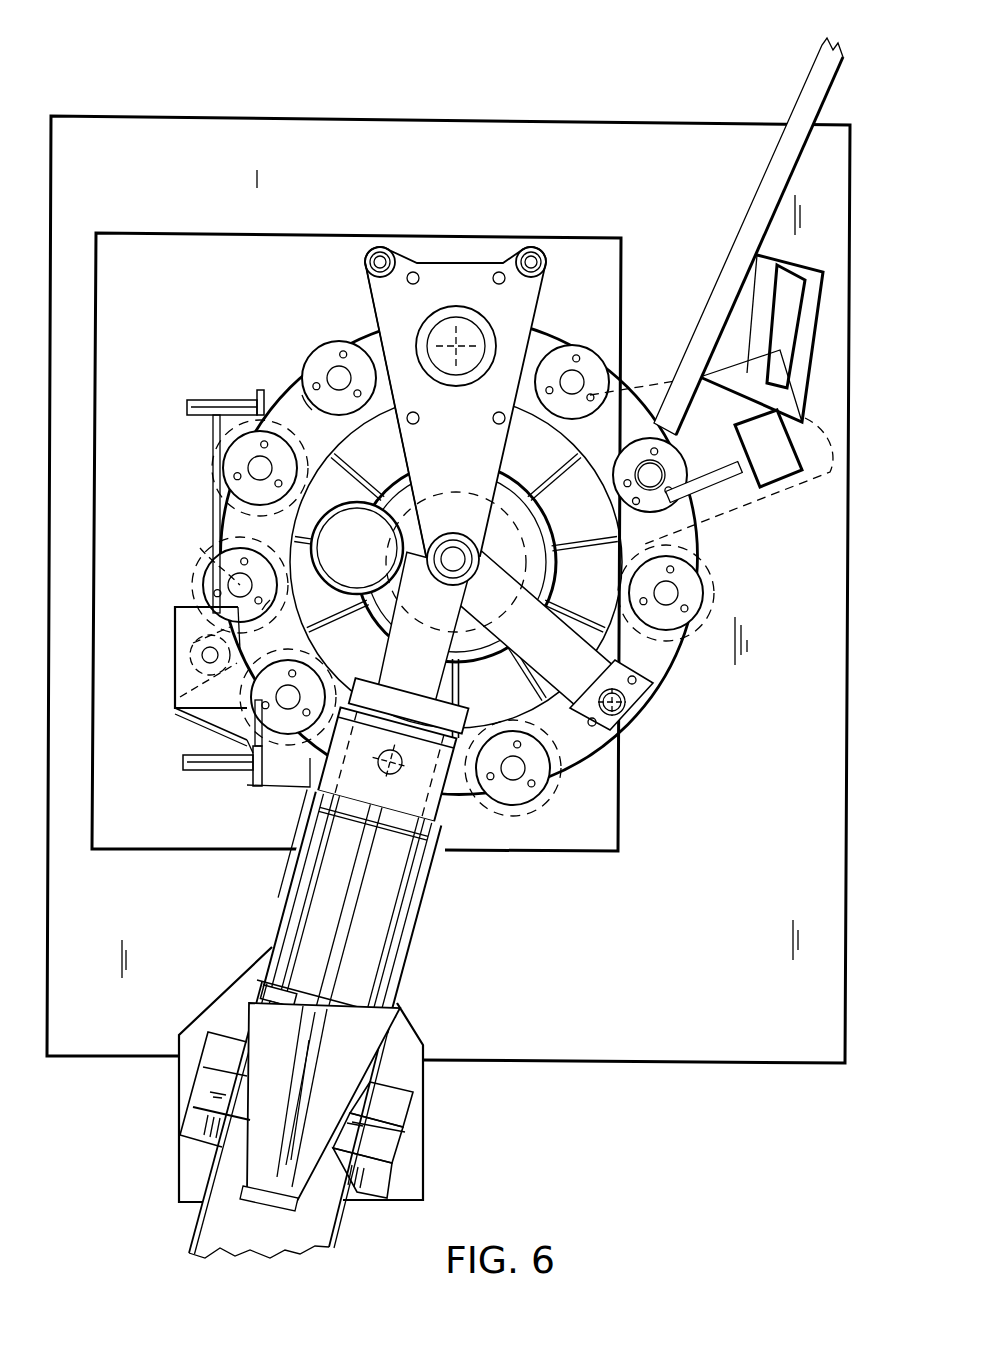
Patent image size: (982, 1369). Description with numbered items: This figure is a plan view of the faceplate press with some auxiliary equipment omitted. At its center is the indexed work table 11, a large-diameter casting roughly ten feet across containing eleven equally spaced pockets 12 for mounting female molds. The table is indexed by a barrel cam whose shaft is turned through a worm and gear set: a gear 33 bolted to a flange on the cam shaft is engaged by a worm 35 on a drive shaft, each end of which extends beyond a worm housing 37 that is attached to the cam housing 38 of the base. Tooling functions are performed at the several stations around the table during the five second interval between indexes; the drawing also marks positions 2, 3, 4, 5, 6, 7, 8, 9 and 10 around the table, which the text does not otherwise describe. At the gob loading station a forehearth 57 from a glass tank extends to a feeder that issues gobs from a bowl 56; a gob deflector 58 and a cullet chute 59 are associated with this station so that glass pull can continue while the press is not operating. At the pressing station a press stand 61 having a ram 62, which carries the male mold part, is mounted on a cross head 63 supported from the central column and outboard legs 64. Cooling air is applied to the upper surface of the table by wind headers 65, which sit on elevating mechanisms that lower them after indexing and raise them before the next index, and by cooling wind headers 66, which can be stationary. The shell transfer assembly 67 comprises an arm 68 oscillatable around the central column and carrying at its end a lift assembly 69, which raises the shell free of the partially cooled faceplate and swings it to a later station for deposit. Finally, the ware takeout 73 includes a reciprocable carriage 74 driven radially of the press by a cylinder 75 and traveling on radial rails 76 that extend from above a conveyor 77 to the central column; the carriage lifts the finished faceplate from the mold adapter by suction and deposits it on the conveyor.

The central shaft 2 is at (447, 340).
The roller station 3 is at (262, 468).
The roller station 4 is at (287, 700).
The roller station 5 is at (513, 771).
The roller station 6 is at (668, 596).
The roller station 7 is at (573, 386).
The roller station 8 is at (337, 373).
The roller station 9 is at (240, 585).
The machine frame 10 is at (447, 805).
The indexed work table 11 is at (212, 528).
The pockets 12 is at (306, 386).
The gear 33 is at (175, 715).
The worm 35 is at (187, 690).
The worm housing 37 is at (220, 712).
The cam housing 38 is at (235, 745).
The bowl 56 is at (459, 556).
The forehearth 57 is at (750, 530).
The gob deflector 58 is at (660, 496).
The cullet chute 59 is at (718, 278).
The press stand 61 is at (448, 381).
The ram 62 is at (477, 382).
The cross head 63 is at (363, 320).
The outboard legs 64 is at (530, 259).
The wind headers 65 is at (212, 416).
The cooling wind headers 66 is at (200, 560).
The shell transfer assembly 67 is at (594, 640).
The arm 68 is at (546, 697).
The lift assembly 69 is at (588, 745).
The ware takeout 73 is at (414, 963).
The reciprocable carriage 74 is at (394, 686).
The cylinder 75 is at (297, 1110).
The radial rails 76 is at (293, 933).
The conveyor 77 is at (250, 1238).